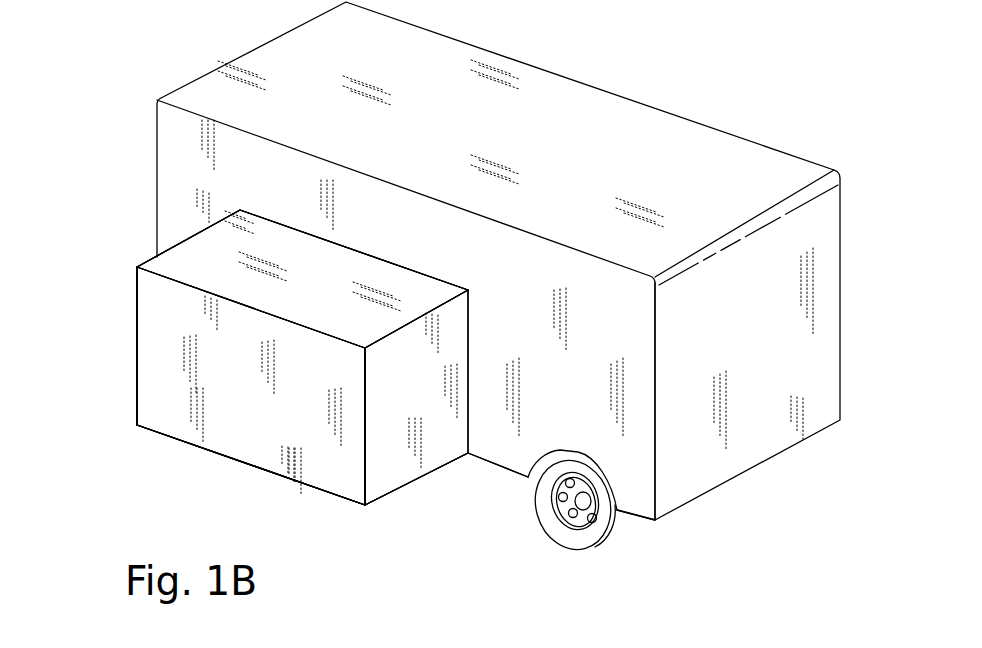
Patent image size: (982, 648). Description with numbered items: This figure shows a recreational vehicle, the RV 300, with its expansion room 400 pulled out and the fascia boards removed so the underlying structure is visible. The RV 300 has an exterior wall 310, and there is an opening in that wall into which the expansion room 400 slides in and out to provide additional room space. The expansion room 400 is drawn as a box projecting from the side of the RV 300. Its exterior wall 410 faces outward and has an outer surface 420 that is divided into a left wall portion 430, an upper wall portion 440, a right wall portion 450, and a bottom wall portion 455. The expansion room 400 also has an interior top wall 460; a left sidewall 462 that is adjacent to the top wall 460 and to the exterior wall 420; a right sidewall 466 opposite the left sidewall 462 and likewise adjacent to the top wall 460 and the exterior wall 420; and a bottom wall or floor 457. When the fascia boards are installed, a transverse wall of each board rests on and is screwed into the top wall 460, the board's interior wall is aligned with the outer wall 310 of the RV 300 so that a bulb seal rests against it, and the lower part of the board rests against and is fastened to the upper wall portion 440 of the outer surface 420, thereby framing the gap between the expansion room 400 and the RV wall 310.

The RV 300 is at (765, 158).
The exterior wall 310 is at (483, 390).
The expansion room 400 is at (316, 469).
The exterior wall 410 is at (233, 390).
The outer surface 420 is at (176, 421).
The left wall portion 430 is at (156, 391).
The upper wall portion 440 is at (266, 321).
The right wall portion 450 is at (354, 471).
The bottom wall portion 455 is at (276, 461).
The bottom wall or floor 457 is at (358, 511).
The interior top wall 460 is at (227, 237).
The left sidewall 462 is at (130, 333).
The right sidewall 466 is at (398, 467).